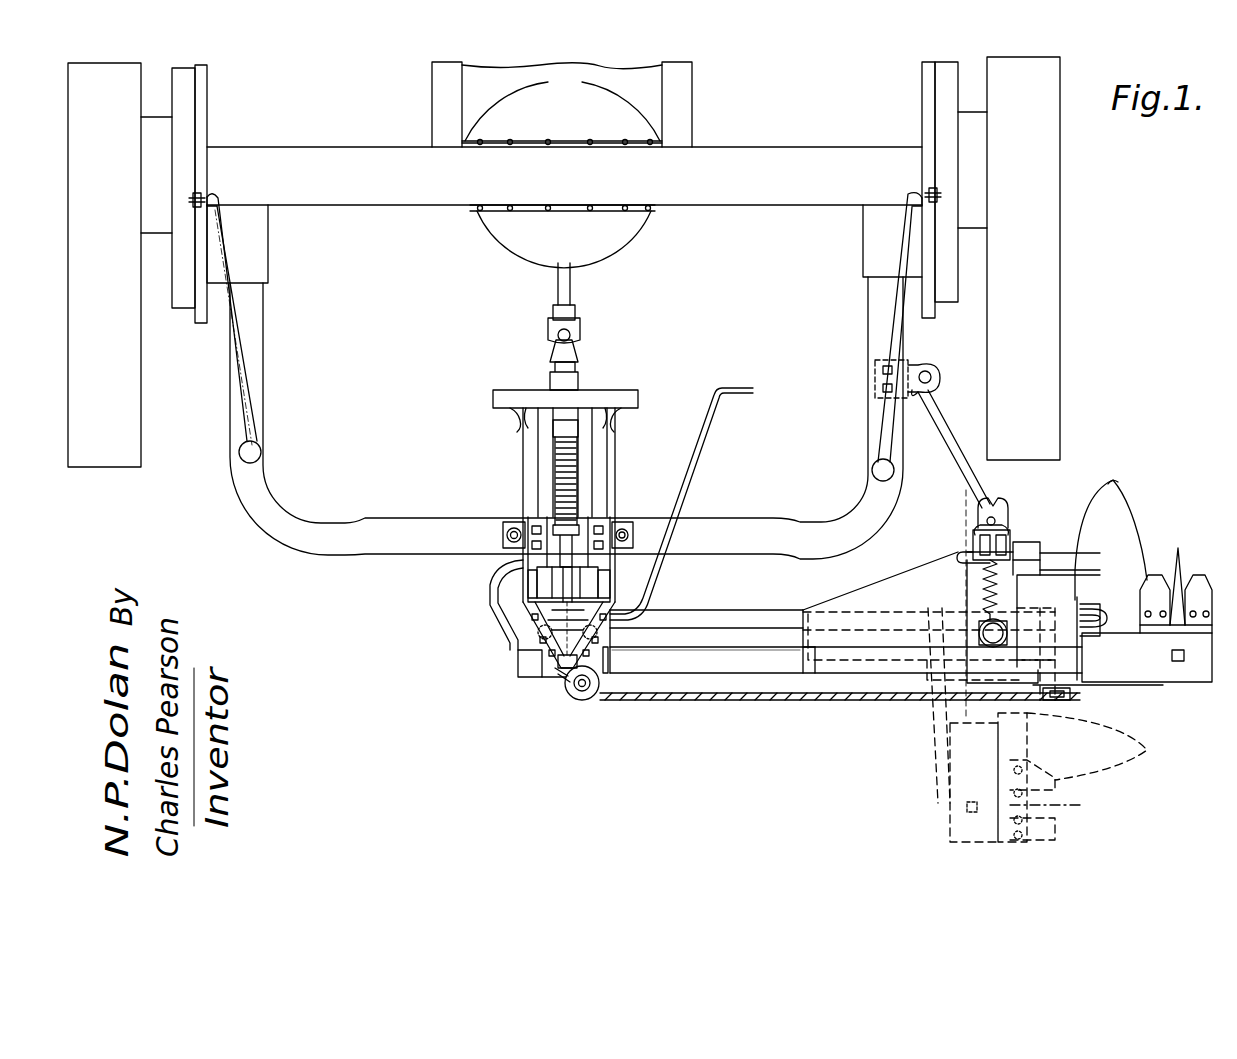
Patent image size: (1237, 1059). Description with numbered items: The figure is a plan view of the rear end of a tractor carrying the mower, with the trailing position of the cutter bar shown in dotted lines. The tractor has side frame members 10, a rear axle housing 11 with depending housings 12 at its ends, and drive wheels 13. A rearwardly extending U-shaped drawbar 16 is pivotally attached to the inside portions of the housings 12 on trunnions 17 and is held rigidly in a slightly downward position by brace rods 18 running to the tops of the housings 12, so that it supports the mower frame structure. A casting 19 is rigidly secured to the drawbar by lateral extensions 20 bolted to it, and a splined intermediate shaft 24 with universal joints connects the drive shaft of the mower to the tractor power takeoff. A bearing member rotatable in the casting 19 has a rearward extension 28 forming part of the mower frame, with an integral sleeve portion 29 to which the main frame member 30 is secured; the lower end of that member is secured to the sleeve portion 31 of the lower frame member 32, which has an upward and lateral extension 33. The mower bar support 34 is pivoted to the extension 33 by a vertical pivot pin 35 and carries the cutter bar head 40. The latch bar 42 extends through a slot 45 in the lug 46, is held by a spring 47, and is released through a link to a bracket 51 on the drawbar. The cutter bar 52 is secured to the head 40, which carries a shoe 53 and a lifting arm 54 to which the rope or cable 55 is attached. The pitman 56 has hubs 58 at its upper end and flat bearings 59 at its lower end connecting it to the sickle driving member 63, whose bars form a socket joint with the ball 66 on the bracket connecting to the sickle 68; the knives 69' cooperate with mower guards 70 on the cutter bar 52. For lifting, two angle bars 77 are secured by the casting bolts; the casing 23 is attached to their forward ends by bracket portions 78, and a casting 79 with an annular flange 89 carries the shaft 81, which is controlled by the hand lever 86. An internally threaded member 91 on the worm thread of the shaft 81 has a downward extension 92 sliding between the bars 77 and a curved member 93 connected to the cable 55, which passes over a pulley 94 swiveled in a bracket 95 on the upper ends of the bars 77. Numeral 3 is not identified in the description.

The section line 3 is at (967, 498).
The side frame members 10 is at (693, 87).
The rear axle housing 11 is at (722, 196).
The depending housings 12 is at (201, 97).
The drive wheels 13 is at (130, 414).
The U-shaped drawbar 16 is at (410, 546).
The trunnions 17 is at (262, 247).
The brace rods 18 is at (233, 366).
The casting 19 is at (951, 427).
The lateral extensions 20 is at (623, 526).
The casing 23 is at (505, 392).
The splined intermediate shaft 24 is at (558, 297).
The rearward extension 28 is at (500, 612).
The sleeve portion 29 is at (527, 665).
The main frame member 30 is at (700, 666).
The sleeve portion 31 is at (810, 666).
The frame member 32 is at (900, 684).
The upward and lateral extension 33 is at (1026, 546).
The mower bar support 34 is at (1032, 560).
The pivot pin 35 is at (980, 624).
The cutter bar head 40 is at (1119, 497).
The latch bar 42 is at (1000, 516).
The slot 45 is at (970, 538).
The lug 46 is at (973, 545).
The spring 47 is at (983, 577).
The bracket 51 is at (916, 362).
The cutter bar 52 is at (1198, 674).
The shoe 53 is at (1103, 500).
The lifting arm 54 is at (1065, 697).
The rope or cable 55 is at (858, 701).
The pitman 56 is at (705, 620).
The hubs 58 is at (983, 633).
The flat bearings 59 is at (1000, 680).
The sickle driving member 63 is at (1058, 637).
The ball 66 is at (1095, 609).
The sickle 68 is at (1118, 610).
The knives 69' is at (1176, 575).
The mower guards 70 is at (1181, 575).
The angle bars 77 is at (523, 458).
The bracket portions 78 is at (516, 420).
The casting 79 is at (594, 592).
The shaft 81 is at (558, 472).
The hand lever 86 is at (683, 470).
The annular flange 89 is at (545, 584).
The internally threaded member 91 is at (585, 512).
The downward extension 92 is at (518, 520).
The curved member 93 is at (565, 558).
The pulley 94 is at (578, 698).
The bracket 95 is at (562, 674).